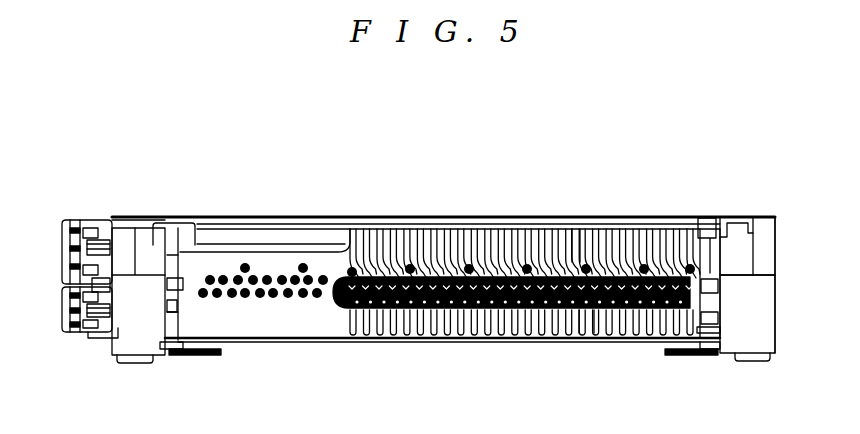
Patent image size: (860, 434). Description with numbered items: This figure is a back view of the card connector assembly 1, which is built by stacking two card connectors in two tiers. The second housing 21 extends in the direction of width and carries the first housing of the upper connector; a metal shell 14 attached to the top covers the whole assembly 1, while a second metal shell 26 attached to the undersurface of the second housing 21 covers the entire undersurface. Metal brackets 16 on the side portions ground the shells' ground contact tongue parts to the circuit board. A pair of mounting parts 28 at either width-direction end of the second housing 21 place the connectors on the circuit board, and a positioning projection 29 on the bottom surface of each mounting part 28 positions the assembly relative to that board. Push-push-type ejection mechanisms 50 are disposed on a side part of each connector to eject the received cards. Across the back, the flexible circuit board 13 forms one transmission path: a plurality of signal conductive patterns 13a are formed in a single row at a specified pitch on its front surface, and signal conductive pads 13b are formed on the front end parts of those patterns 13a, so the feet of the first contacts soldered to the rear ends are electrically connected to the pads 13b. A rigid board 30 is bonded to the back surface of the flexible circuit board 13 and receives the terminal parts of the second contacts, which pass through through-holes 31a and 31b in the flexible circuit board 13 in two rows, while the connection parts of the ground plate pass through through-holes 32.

The card connector assembly 1 is at (704, 150).
The flexible circuit board 13 is at (508, 216).
The signal conductive patterns 13a is at (605, 217).
The signal conductive pads 13b is at (597, 340).
The metal shell 14 is at (175, 221).
The metal brackets 16 is at (200, 357).
The second housing 21 is at (767, 248).
The metal shell 26 is at (403, 342).
The mounting parts 28 is at (111, 345).
The positioning projection 29 is at (133, 364).
The rigid board 30 is at (371, 217).
The through-holes 31a is at (245, 297).
The through-holes 31b is at (280, 297).
The through-holes 32 is at (245, 263).
The ejection mechanisms 50 is at (58, 233).